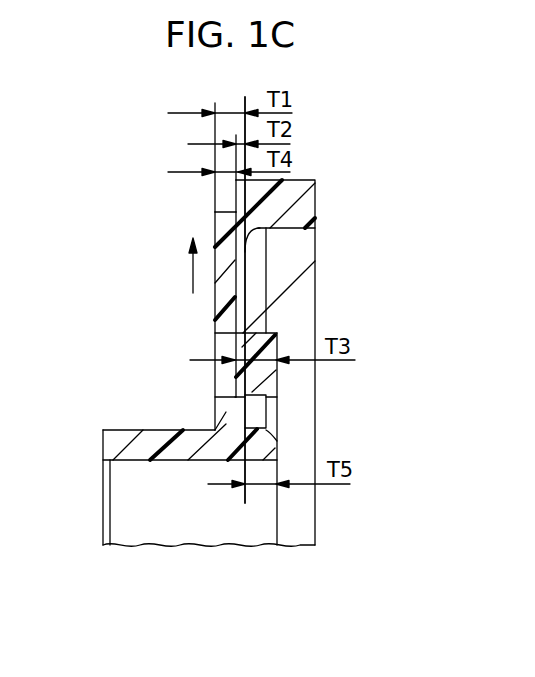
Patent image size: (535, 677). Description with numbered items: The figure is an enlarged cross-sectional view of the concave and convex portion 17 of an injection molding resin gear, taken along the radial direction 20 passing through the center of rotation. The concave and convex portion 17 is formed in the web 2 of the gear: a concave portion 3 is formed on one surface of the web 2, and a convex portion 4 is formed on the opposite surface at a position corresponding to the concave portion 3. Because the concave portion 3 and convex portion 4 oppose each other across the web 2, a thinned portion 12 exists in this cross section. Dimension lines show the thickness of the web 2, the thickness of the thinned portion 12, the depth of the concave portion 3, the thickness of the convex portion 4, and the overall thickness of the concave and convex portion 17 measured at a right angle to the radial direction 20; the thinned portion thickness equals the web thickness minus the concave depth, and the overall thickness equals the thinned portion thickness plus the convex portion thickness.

The thinned portion 12 is at (263, 332).
The web 2 is at (217, 325).
The concave portion 3 is at (217, 391).
The convex portion 4 is at (277, 353).
The concave and convex portion 17 is at (268, 372).
The radial direction 20 is at (192, 273).